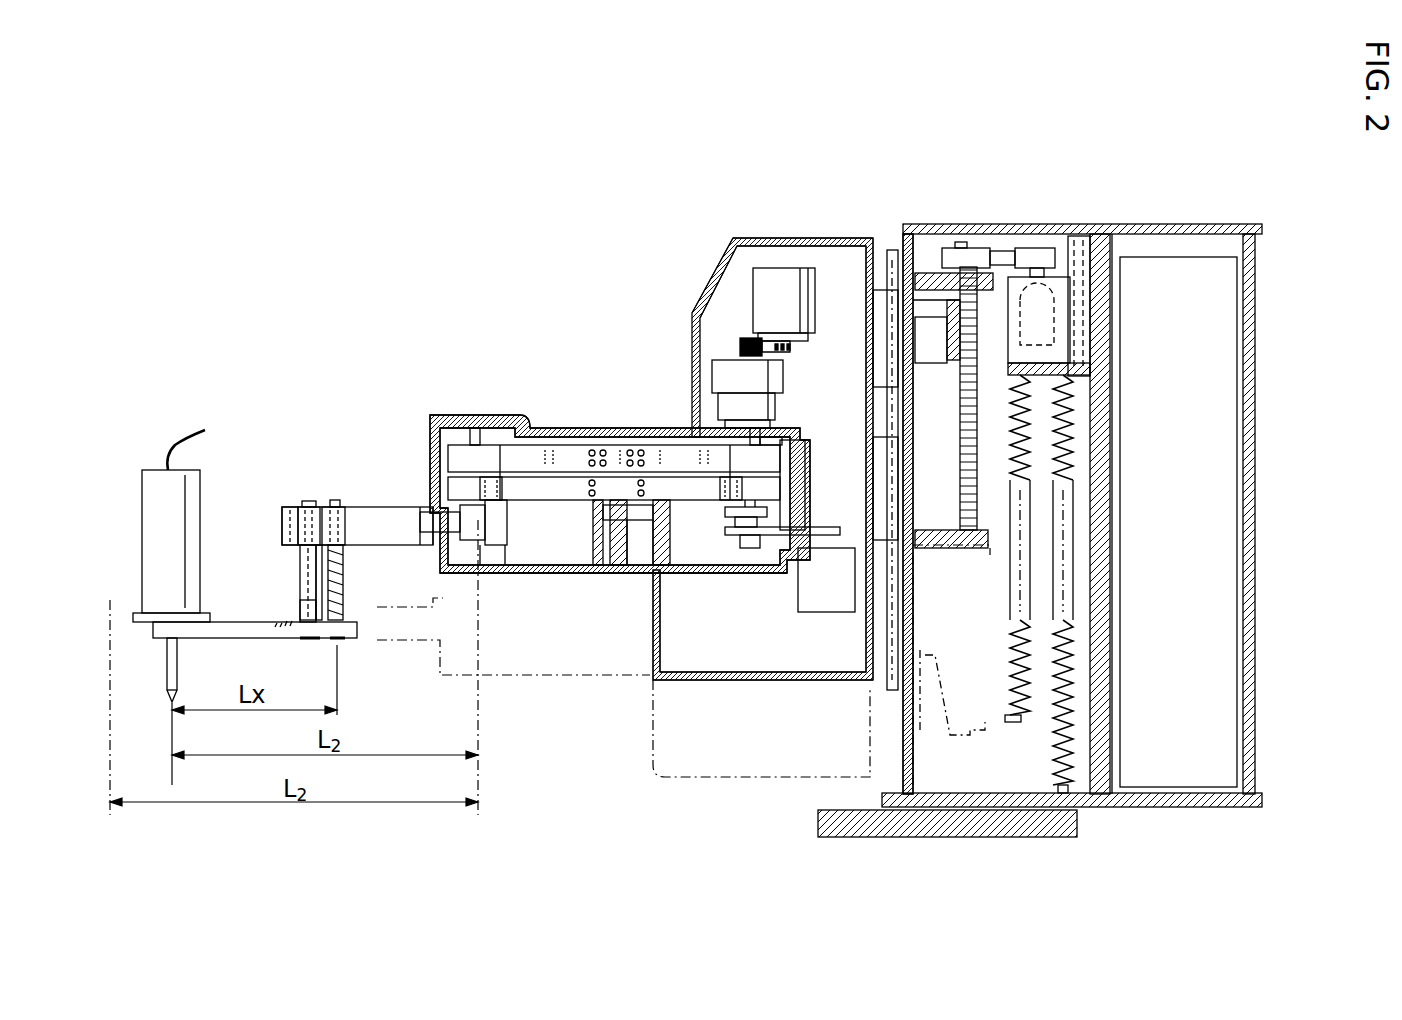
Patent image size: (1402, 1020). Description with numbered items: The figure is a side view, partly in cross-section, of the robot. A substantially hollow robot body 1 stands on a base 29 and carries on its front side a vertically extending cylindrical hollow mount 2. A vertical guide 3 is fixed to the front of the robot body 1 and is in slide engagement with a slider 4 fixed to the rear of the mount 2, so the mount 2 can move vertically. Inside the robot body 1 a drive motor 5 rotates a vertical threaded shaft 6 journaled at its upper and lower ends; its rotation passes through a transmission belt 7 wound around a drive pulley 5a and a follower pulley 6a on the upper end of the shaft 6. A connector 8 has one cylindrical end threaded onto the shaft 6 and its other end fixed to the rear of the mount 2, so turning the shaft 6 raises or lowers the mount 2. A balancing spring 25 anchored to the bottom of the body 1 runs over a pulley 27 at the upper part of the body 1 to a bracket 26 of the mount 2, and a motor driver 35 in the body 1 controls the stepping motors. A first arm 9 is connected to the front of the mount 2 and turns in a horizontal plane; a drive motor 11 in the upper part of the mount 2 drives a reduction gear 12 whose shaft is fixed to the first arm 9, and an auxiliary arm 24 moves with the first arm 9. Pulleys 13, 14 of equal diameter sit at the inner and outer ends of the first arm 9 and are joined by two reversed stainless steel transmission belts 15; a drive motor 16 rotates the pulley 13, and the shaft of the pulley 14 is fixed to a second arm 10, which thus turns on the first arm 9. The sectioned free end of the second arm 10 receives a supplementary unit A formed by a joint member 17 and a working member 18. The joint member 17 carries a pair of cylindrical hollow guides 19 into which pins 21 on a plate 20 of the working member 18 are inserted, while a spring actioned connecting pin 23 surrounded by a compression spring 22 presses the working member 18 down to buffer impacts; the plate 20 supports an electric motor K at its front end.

The robot body 1 is at (1178, 222).
The cylindrical hollow mount 2 is at (748, 236).
The vertical guide 3 is at (898, 676).
The slider 4 is at (880, 310).
The drive motor 5 is at (1065, 292).
The drive pulley 5a is at (1035, 256).
The vertical threaded shaft 6 is at (960, 442).
The follower pulley 6a is at (955, 255).
The transmission belt 7 is at (1003, 258).
The connector 8 is at (935, 370).
The first arm 9 is at (590, 430).
The second arm 10 is at (392, 505).
The drive motor 11 is at (765, 300).
The reduction gear 12 is at (722, 372).
The pulley 13 is at (800, 460).
The pulley 14 is at (510, 455).
The transmission belts 15 is at (666, 450).
The drive motor 16 is at (828, 595).
The joint member 17 is at (292, 500).
The working member 18 is at (220, 608).
The cylindrical hollow guides 19 is at (300, 570).
The plate 20 is at (260, 628).
The pins 21 is at (303, 612).
The compression spring 22 is at (340, 575).
The spring actioned connecting pin 23 is at (345, 600).
The auxiliary arm 24 is at (543, 575).
The balancing spring 25 is at (1068, 748).
The bracket 26 is at (957, 738).
The pulley 27 is at (1098, 230).
The base 29 is at (980, 822).
The motor driver 35 is at (1215, 410).
The supplementary unit A is at (315, 500).
The electric motor K is at (195, 505).